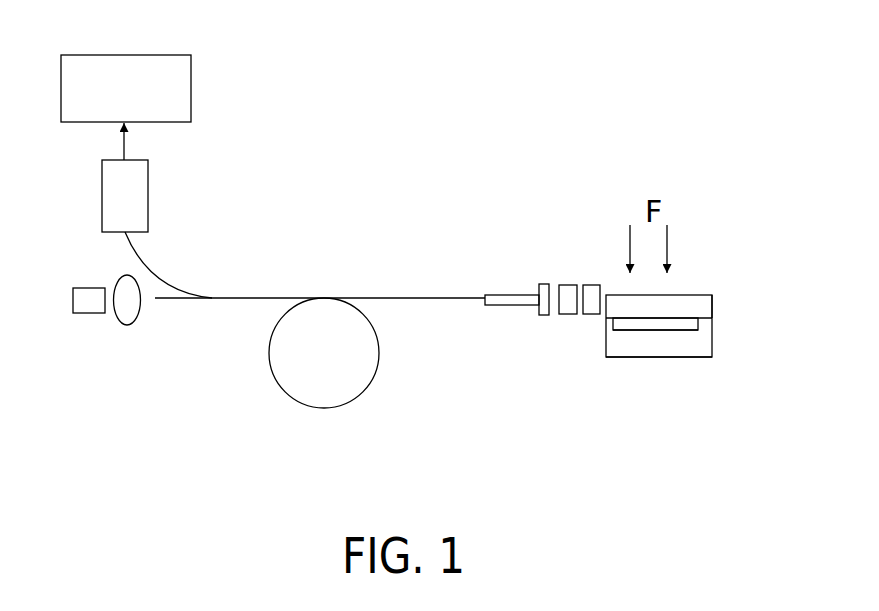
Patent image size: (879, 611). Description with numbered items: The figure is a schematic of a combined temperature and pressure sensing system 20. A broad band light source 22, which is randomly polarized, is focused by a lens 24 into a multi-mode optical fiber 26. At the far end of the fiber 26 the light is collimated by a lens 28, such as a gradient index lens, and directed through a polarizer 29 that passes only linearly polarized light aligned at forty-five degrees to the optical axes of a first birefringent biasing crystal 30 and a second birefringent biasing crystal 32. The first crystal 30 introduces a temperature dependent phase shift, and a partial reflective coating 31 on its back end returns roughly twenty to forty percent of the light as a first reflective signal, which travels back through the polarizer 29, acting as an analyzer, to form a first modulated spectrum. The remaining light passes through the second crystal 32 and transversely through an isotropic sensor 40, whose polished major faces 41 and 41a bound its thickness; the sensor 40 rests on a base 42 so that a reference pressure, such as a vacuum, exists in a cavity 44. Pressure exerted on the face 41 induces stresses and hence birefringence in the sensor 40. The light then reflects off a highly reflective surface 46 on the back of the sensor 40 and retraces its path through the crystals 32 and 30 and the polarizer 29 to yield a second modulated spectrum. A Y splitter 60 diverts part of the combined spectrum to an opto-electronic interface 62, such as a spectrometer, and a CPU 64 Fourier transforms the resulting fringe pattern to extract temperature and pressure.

The combined temperature and pressure sensing system 20 is at (764, 169).
The broad band light source 22 is at (82, 288).
The lens 24 is at (126, 325).
The multi-mode optical fiber 26 is at (341, 368).
The lens 28 is at (500, 306).
The polarizer 29 is at (544, 317).
The first birefringent biasing crystal 30 is at (565, 283).
The partial reflective coating 31 is at (581, 318).
The second birefringent biasing crystal 32 is at (594, 283).
The sensor 40 is at (716, 337).
The major face 41 is at (698, 286).
The major face 41a is at (637, 322).
The base 42 is at (719, 353).
The cavity 44 is at (661, 331).
The highly reflective surface 46 is at (716, 296).
The Y splitter 60 is at (241, 278).
The opto-electronic interface 62 is at (148, 185).
The CPU 64 is at (193, 92).